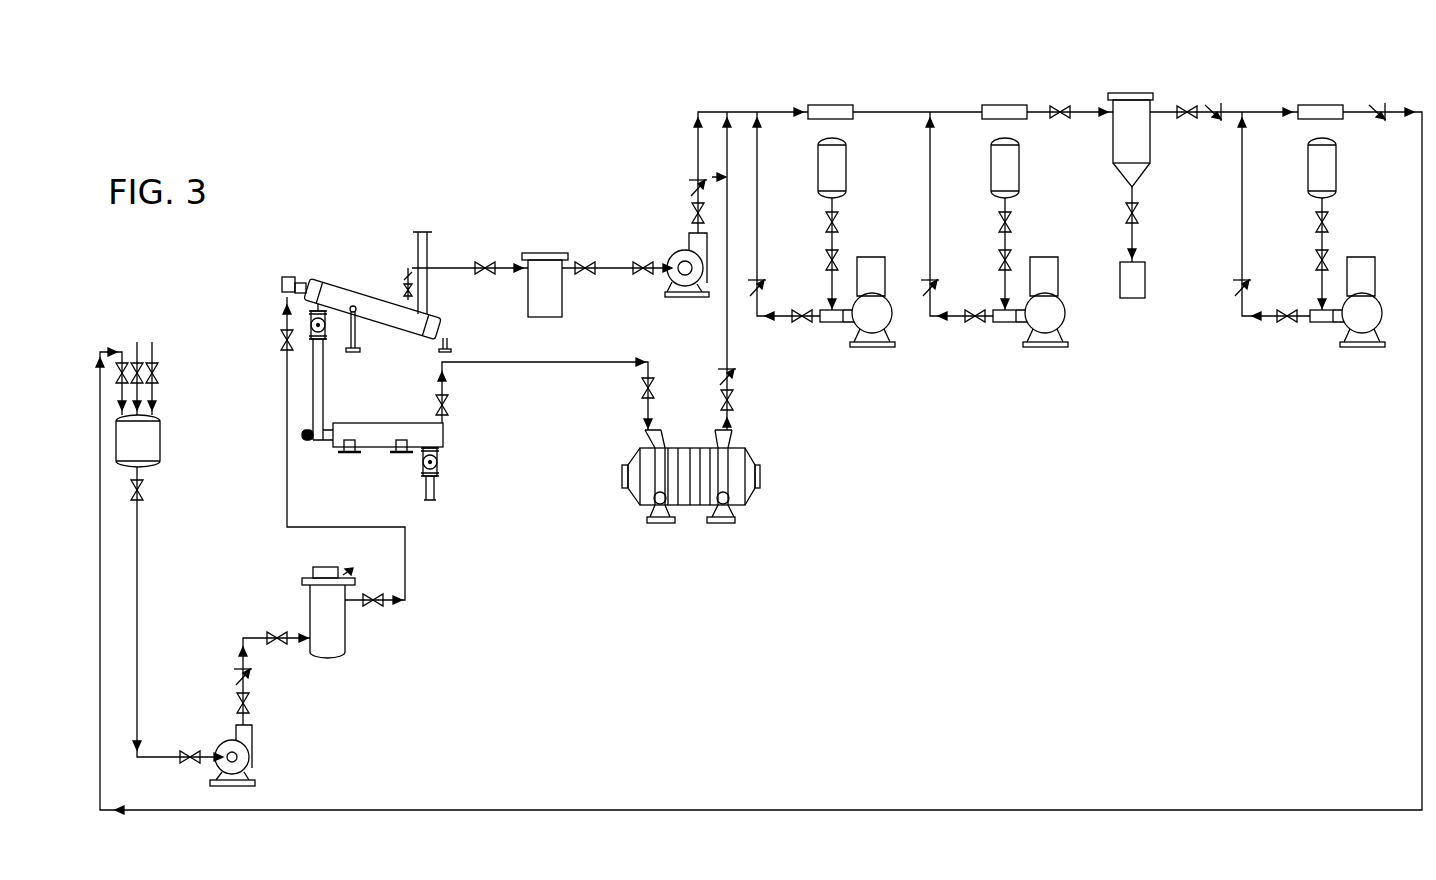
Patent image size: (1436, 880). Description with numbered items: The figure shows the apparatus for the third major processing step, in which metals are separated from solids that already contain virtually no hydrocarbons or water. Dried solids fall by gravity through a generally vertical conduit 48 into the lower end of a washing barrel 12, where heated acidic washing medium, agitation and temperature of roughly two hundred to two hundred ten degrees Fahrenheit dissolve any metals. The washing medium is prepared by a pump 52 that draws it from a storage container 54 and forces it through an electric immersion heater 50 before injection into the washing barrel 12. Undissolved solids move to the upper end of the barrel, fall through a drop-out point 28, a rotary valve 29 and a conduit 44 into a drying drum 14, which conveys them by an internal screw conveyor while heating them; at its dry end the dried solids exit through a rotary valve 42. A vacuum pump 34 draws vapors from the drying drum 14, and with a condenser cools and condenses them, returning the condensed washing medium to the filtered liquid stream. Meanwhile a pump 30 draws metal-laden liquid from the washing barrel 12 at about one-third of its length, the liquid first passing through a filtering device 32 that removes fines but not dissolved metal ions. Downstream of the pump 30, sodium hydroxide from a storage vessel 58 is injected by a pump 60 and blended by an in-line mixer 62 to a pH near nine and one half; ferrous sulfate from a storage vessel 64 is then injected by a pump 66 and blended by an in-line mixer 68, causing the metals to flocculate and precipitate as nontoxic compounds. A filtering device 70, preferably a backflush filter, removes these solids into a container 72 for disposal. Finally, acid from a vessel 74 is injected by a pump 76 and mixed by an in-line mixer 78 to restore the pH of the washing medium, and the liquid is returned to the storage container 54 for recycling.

The washing barrel 12 is at (326, 276).
The drying drum 14 is at (373, 447).
The drop-out point 28 is at (326, 290).
The rotary valve 29 is at (326, 328).
The pump 30 is at (674, 252).
The filtering device 32 is at (562, 297).
The vacuum pump 34 is at (760, 478).
The rotary valve 42 is at (438, 462).
The conduit 44 is at (324, 391).
The conduit 48 is at (430, 243).
The electric immersion heater 50 is at (307, 610).
The pump 52 is at (250, 758).
The storage container 54 is at (162, 430).
The storage vessel 58 is at (817, 167).
The pump 60 is at (872, 257).
The in-line mixer 62 is at (828, 105).
The storage vessel 64 is at (990, 167).
The pump 66 is at (1045, 257).
The in-line mixer 68 is at (1003, 103).
The filtering device 70 is at (1132, 93).
The container 72 is at (1147, 283).
The vessel 74 is at (1307, 167).
The pump 76 is at (1362, 255).
The in-line mixer 78 is at (1320, 103).